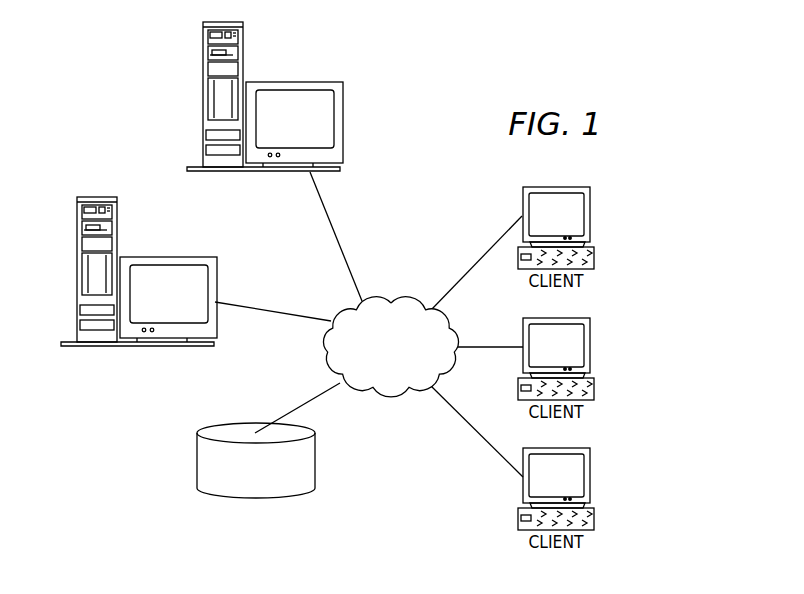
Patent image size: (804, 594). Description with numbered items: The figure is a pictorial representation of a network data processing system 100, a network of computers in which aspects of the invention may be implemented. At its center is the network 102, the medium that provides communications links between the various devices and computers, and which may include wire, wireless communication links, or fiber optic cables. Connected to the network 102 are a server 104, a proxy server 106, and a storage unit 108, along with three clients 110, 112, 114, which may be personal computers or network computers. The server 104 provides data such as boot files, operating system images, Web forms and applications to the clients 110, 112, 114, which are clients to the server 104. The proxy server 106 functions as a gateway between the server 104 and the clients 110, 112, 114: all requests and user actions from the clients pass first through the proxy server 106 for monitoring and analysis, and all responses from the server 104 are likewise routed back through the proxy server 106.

The network data processing system 100 is at (459, 90).
The network 102 is at (392, 396).
The server 104 is at (77, 270).
The proxy server 106 is at (203, 95).
The storage unit 108 is at (239, 504).
The client 110 is at (590, 213).
The client 112 is at (590, 345).
The client 114 is at (590, 478).